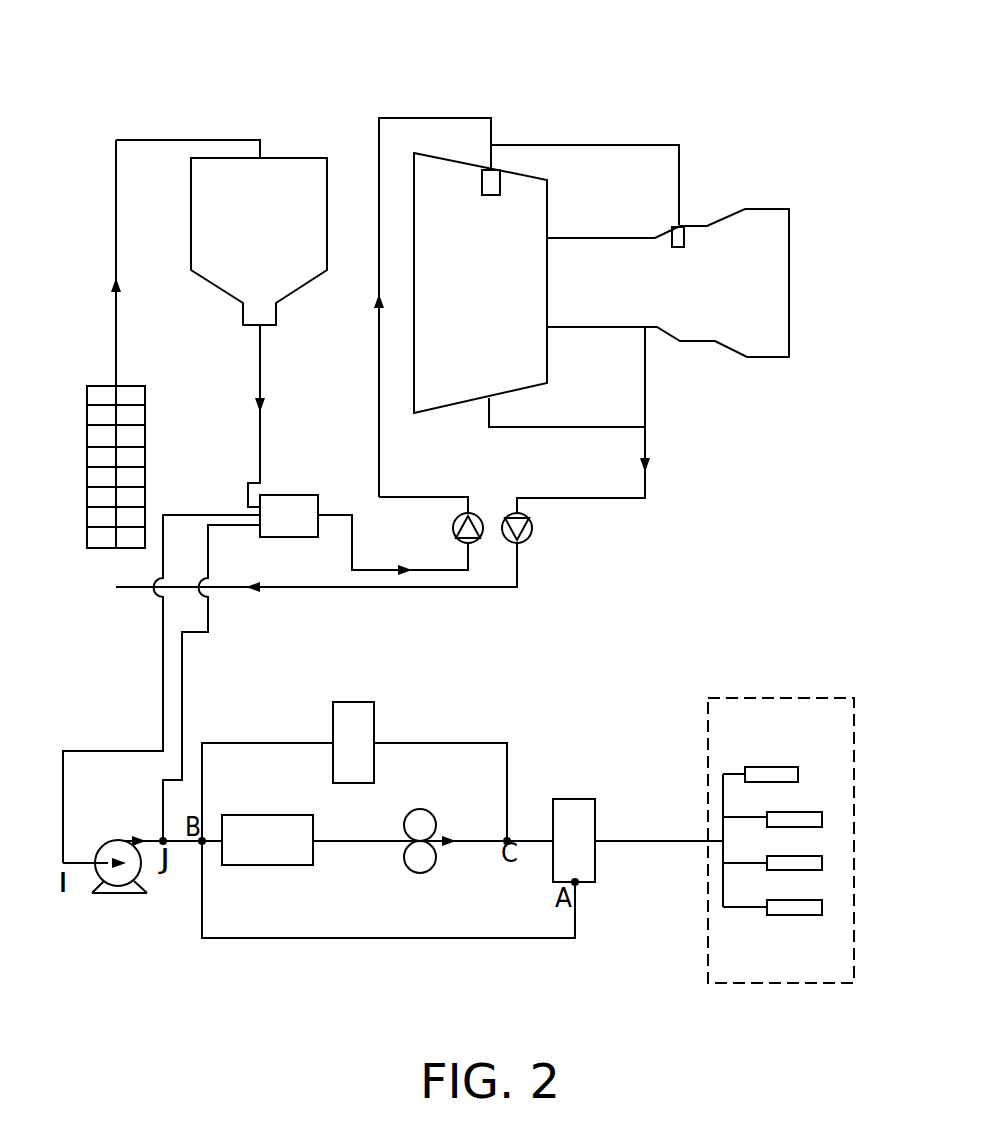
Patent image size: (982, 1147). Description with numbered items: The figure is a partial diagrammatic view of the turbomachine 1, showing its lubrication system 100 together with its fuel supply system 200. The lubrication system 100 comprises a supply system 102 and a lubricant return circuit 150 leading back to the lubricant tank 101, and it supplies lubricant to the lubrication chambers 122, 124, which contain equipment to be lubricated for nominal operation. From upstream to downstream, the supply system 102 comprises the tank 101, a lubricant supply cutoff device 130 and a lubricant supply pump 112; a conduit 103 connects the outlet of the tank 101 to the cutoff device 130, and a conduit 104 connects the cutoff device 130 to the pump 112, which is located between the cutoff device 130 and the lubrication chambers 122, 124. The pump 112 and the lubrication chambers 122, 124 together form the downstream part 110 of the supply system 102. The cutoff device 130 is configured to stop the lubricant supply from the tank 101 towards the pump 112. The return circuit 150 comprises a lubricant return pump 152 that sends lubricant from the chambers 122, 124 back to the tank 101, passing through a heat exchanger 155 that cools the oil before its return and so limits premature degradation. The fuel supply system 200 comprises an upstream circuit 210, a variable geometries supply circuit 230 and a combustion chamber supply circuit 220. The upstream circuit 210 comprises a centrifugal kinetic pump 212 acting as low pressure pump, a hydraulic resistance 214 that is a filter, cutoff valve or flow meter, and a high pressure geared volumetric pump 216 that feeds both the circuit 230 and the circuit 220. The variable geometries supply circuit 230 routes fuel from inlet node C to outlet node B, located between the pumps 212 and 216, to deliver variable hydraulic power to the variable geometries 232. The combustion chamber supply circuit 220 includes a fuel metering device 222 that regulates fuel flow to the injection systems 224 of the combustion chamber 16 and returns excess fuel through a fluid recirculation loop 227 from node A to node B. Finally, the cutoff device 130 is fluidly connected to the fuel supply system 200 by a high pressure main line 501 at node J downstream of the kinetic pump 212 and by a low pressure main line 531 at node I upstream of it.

The lubrication system 100 is at (222, 85).
The lubricant tank 101 is at (203, 233).
The supply system 102 is at (377, 147).
The conduit 103 is at (262, 393).
The conduit 104 is at (372, 580).
The downstream part of the supply system 110 is at (810, 108).
The lubricant supply pump 112 is at (452, 528).
The lubrication chamber 122 is at (484, 182).
The lubrication chamber 124 is at (680, 230).
The turbomachine 1 is at (753, 196).
The lubricant supply cutoff device 130 is at (305, 497).
The lubricant return circuit 150 is at (647, 443).
The lubricant return pump 152 is at (533, 534).
The heat exchanger 155 is at (138, 455).
The fuel supply system 200 is at (641, 654).
The upstream circuit 210 is at (238, 900).
The kinetic pump 212 is at (122, 852).
The hydraulic resistance 214 is at (278, 858).
The high pressure volumetric pump 216 is at (424, 863).
The combustion chamber supply circuit 220 is at (633, 840).
The fuel metering device 222 is at (583, 883).
The injection systems 224 is at (778, 768).
The fluid recirculation loop 227 is at (495, 942).
The variable geometries supply circuit 230 is at (478, 736).
The variable geometries 232 is at (355, 714).
The main line 501 is at (184, 692).
The main line 531 is at (162, 740).
The combustion chamber 16 is at (807, 984).